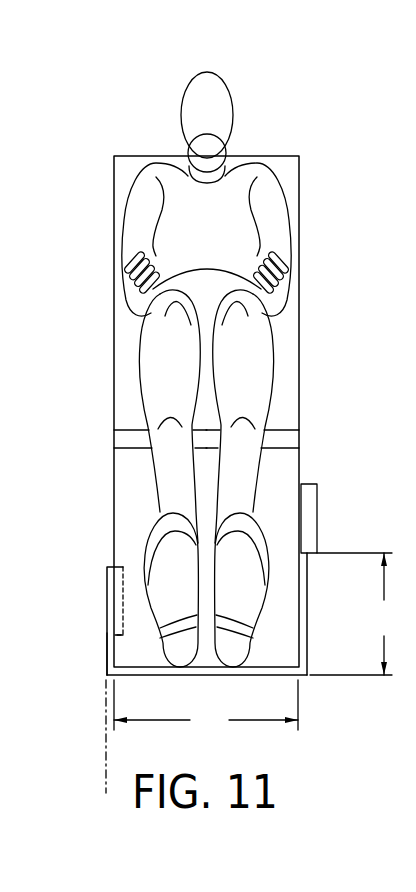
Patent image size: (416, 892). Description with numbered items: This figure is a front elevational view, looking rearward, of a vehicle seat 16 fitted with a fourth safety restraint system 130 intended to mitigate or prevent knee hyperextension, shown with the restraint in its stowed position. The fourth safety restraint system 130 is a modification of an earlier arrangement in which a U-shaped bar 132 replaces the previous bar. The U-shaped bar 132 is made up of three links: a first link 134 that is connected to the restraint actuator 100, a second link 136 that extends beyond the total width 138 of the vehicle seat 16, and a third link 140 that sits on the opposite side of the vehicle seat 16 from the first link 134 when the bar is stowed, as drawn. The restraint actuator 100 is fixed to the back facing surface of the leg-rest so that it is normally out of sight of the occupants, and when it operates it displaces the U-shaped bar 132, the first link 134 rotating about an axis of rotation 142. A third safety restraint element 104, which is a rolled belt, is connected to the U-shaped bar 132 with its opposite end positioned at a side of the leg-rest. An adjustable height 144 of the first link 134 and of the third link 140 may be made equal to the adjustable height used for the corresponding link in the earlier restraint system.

The first vehicle seat 16 is at (315, 242).
The restraint actuator 100 is at (120, 600).
The third safety restraint element 104 is at (308, 515).
The fourth safety restraint system 130 is at (258, 102).
The U-shaped bar 132 is at (100, 582).
The first link 134 is at (107, 633).
The second link 136 is at (203, 673).
The total width 138 is at (206, 706).
The third link 140 is at (303, 628).
The axis of rotation 142 is at (105, 757).
The adjustable height 144 is at (356, 614).